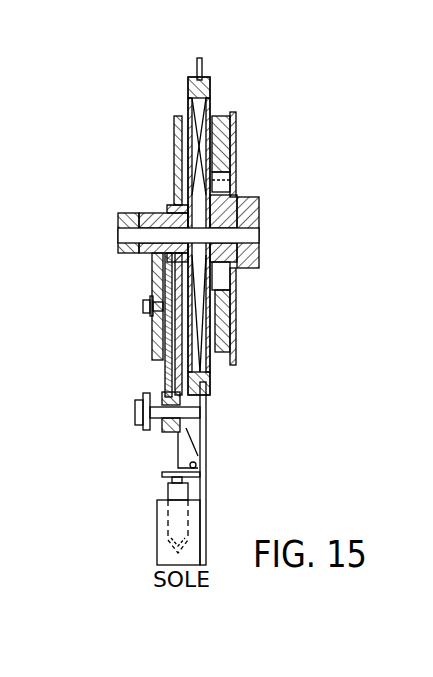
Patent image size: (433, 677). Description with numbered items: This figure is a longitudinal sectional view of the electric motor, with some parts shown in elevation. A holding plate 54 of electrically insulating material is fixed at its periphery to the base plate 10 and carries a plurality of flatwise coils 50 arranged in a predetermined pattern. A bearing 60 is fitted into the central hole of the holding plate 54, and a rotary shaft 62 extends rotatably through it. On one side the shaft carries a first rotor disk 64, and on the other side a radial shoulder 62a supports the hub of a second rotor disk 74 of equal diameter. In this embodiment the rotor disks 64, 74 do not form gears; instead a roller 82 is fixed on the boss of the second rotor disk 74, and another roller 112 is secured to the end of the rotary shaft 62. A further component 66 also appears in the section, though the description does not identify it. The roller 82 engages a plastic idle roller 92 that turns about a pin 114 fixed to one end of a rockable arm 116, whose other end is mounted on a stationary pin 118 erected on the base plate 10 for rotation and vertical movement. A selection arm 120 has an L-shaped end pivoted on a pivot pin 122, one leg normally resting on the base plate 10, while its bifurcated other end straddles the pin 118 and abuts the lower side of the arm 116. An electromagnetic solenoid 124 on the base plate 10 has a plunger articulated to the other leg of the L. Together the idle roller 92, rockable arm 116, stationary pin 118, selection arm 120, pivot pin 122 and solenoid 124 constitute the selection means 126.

The base plate 10 is at (201, 60).
The holding plate 54 is at (212, 90).
The second rotor disk 74 is at (174, 128).
The flatwise coils 50 is at (214, 112).
The bearing 60 is at (236, 200).
The radial shoulder 62a is at (178, 206).
The roller 82 is at (150, 213).
The roller 112 is at (118, 225).
The rotary shaft 62 is at (259, 233).
The bearing 66 is at (232, 330).
The first rotor disk 64 is at (236, 346).
The plastic idle roller 92 is at (152, 330).
The pin 114 is at (148, 300).
The rockable arm 116 is at (165, 373).
The stationary pin 118 is at (135, 410).
The selection means 126 is at (172, 432).
The selection arm 120 is at (200, 445).
The pivot pin 122 is at (197, 465).
The electromagnetic solenoid 124 is at (157, 554).